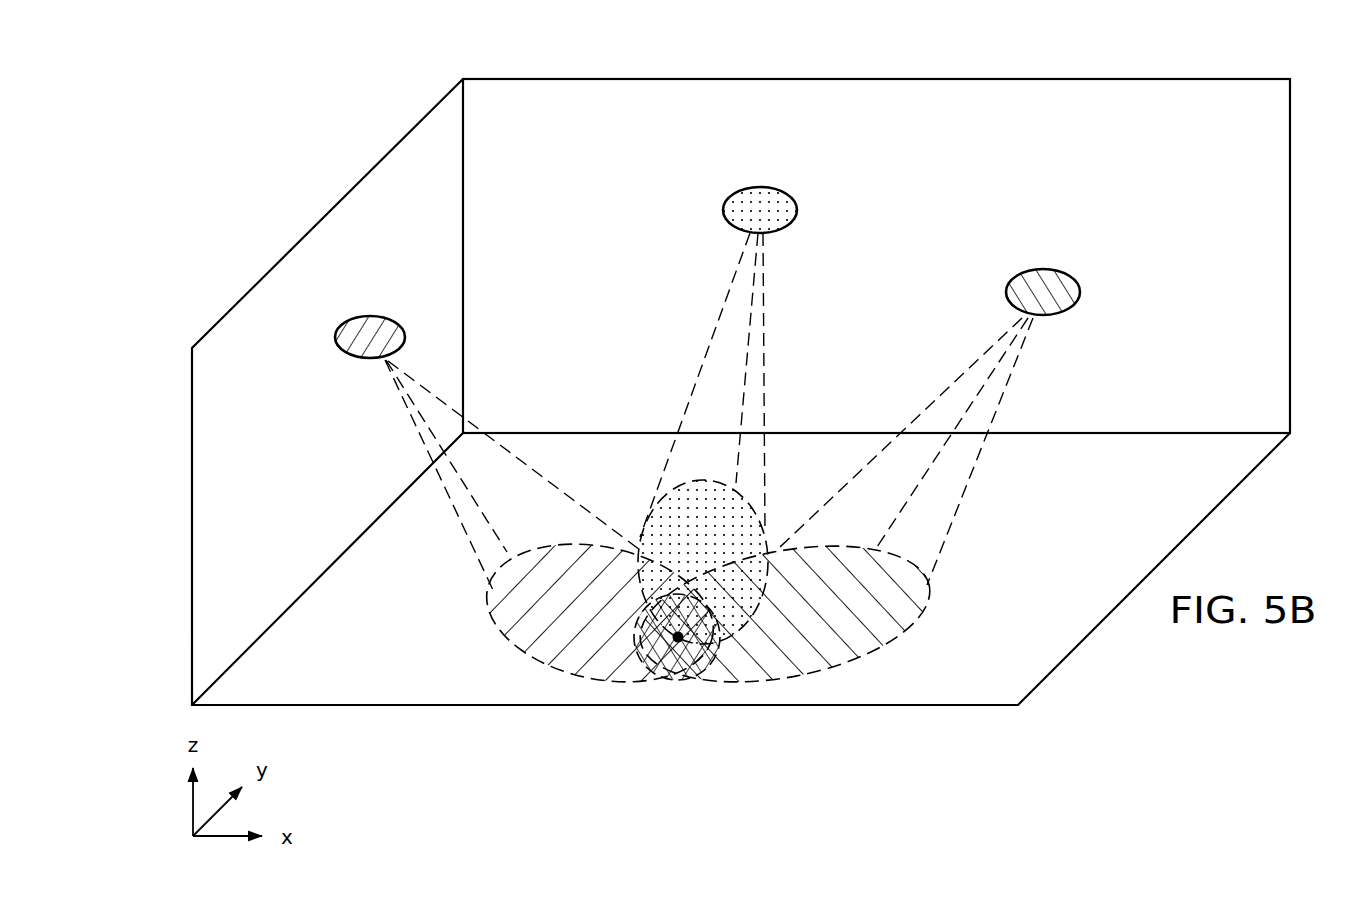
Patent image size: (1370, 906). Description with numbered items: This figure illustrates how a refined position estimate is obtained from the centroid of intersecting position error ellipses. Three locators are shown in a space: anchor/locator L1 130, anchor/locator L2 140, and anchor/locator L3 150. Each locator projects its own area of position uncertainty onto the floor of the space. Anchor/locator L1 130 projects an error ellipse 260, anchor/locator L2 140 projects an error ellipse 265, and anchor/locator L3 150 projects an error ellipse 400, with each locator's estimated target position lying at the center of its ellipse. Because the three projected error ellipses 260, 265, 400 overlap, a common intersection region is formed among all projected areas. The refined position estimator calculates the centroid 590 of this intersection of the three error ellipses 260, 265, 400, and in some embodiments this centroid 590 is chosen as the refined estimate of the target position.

The anchor/locator L1 130 is at (338, 339).
The anchor/locator L2 140 is at (1078, 292).
The anchor/locator L3 150 is at (762, 188).
The error ellipse 260 is at (555, 664).
The error ellipse 265 is at (808, 670).
The error ellipse 400 is at (698, 474).
The centroid 590 is at (657, 652).